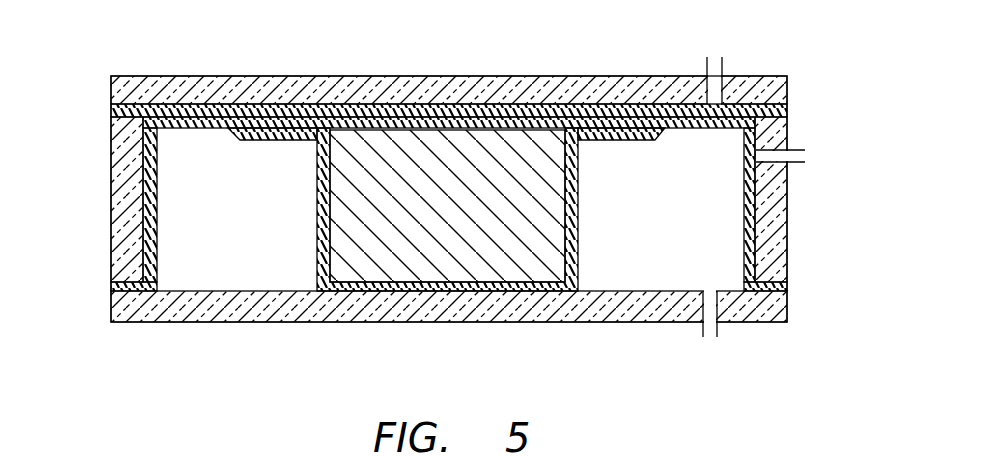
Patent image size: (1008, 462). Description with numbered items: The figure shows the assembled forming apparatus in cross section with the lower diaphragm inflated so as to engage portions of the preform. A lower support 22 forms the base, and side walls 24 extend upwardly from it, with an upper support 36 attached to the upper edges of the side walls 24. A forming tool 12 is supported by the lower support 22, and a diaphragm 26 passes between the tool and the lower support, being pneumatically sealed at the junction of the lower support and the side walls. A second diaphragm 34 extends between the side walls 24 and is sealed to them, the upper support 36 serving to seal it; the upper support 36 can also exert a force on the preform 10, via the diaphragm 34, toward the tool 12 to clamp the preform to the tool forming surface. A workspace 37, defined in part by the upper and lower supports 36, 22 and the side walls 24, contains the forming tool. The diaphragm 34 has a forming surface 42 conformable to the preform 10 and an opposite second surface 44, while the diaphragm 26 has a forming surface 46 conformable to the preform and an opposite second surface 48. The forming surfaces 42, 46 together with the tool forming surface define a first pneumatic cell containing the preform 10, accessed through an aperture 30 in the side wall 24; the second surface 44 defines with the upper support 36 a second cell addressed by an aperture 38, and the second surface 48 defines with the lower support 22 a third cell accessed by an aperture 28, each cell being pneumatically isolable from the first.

The preform 10 is at (470, 113).
The forming tool 12 is at (550, 232).
The lower support 22 is at (300, 313).
The side walls 24 is at (111, 216).
The diaphragm 26 is at (188, 120).
The aperture 28 is at (710, 338).
The aperture 30 is at (805, 155).
The diaphragm 34 is at (216, 107).
The upper support 36 is at (172, 85).
The workspace 37 is at (705, 238).
The aperture 38 is at (712, 57).
The forming surface 42 is at (385, 115).
The second surface 44 is at (282, 100).
The forming surface 46 is at (632, 122).
The second surface 48 is at (682, 127).